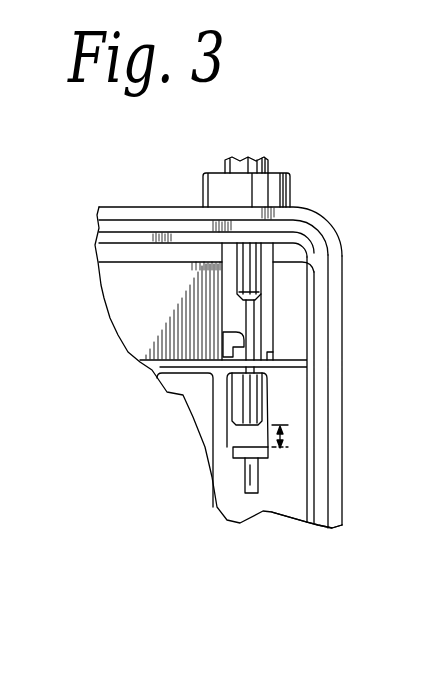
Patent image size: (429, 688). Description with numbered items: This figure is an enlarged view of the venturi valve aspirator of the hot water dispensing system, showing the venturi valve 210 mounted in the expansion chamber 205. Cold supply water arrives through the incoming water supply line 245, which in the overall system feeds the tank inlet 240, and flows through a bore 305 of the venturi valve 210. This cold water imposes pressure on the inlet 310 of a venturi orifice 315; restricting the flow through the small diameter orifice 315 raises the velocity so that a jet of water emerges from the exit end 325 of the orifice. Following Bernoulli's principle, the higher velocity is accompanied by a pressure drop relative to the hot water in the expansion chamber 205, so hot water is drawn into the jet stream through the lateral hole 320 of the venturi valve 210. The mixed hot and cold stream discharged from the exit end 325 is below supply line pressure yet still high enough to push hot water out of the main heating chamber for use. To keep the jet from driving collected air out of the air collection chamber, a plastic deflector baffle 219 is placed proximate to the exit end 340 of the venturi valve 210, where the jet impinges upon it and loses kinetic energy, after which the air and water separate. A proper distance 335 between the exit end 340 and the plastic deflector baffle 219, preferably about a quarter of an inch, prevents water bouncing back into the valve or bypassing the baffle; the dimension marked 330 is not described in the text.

The expansion chamber 205 is at (292, 343).
The venturi valve 210 is at (275, 254).
The plastic deflector baffle 219 is at (268, 457).
The tank inlet 240 is at (292, 190).
The incoming water supply line 245 is at (258, 158).
The bore 305 is at (245, 265).
The inlet 310 is at (263, 295).
The venturi orifice 315 is at (244, 308).
The lateral hole 320 is at (223, 340).
The exit end 325 is at (233, 458).
The clearance gap 330 is at (285, 397).
The distance 335 is at (285, 438).
The exit end 340 is at (250, 429).